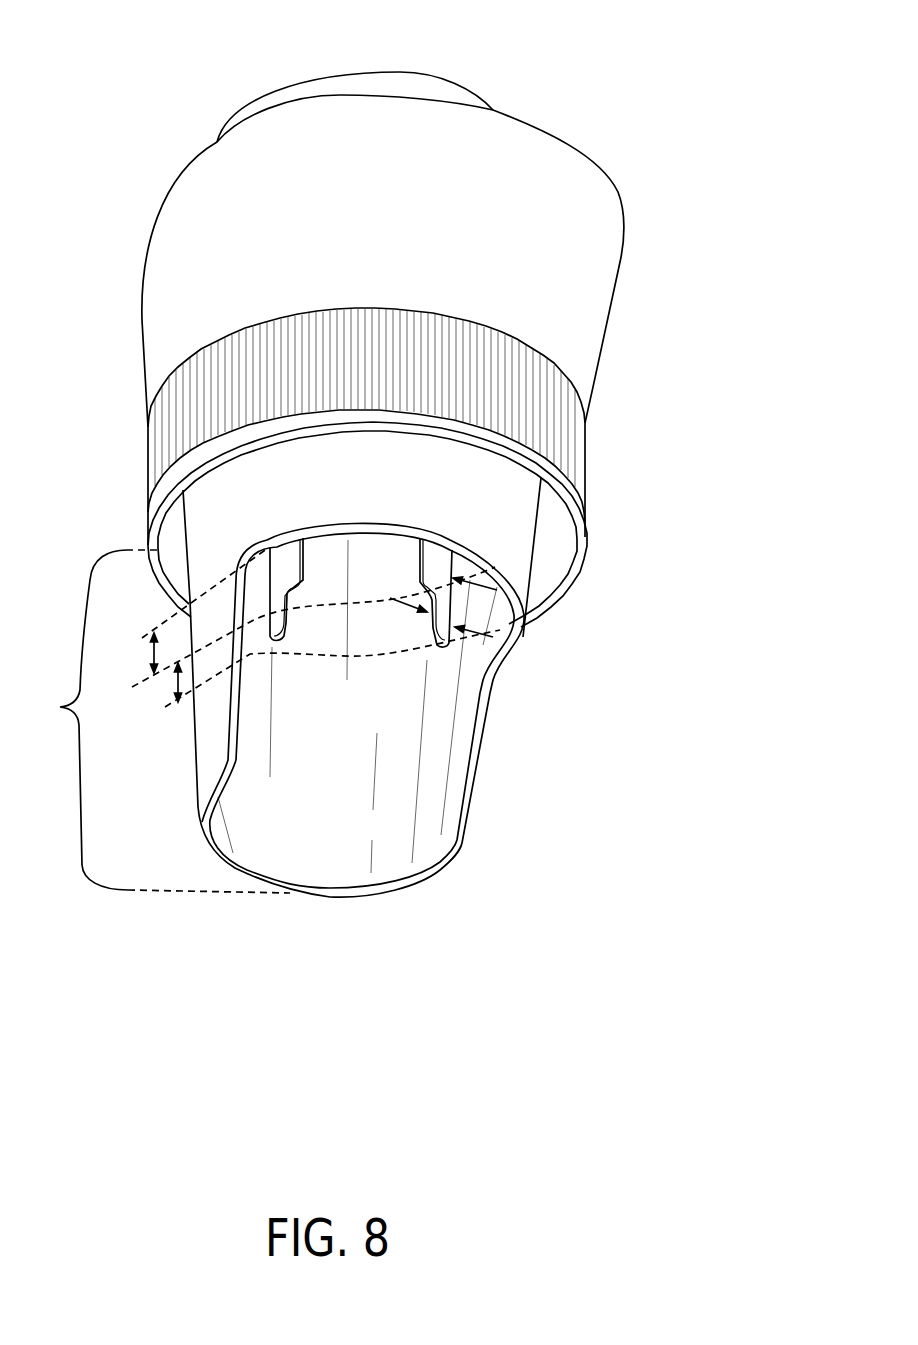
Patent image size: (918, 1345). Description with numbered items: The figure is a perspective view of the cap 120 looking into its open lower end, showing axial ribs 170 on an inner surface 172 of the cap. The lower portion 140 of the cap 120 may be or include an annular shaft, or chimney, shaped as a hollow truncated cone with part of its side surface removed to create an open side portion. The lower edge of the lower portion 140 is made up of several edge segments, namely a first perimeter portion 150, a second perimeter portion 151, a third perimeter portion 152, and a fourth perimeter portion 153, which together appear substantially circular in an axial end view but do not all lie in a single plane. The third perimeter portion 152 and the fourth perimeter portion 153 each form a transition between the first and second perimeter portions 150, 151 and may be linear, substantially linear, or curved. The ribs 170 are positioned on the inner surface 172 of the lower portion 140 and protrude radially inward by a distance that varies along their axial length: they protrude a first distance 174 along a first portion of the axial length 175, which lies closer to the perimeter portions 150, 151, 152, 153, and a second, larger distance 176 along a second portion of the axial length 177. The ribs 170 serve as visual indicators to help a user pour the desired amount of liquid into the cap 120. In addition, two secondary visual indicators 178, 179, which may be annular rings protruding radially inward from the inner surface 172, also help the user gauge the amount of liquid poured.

The cap 120 is at (147, 83).
The lower portion 140 is at (152, 721).
The first perimeter portion 150 is at (387, 895).
The second perimeter portion 151 is at (355, 521).
The third perimeter portion 152 is at (473, 763).
The fourth perimeter portion 153 is at (238, 730).
The axial ribs 170 is at (440, 668).
The inner surface 172 is at (336, 844).
The first distance 174 is at (390, 598).
The first portion of the axial length 175 is at (177, 683).
The second distance 176 is at (417, 558).
The second portion of the axial length 177 is at (150, 648).
The secondary visual indicator 178 is at (497, 592).
The secondary visual indicator 179 is at (350, 605).